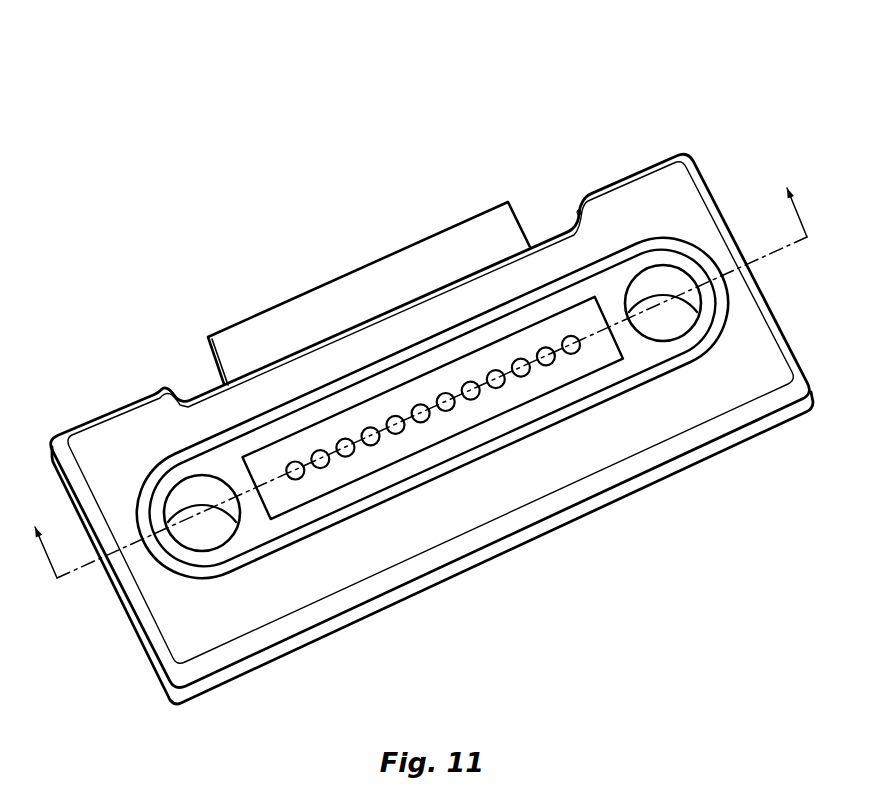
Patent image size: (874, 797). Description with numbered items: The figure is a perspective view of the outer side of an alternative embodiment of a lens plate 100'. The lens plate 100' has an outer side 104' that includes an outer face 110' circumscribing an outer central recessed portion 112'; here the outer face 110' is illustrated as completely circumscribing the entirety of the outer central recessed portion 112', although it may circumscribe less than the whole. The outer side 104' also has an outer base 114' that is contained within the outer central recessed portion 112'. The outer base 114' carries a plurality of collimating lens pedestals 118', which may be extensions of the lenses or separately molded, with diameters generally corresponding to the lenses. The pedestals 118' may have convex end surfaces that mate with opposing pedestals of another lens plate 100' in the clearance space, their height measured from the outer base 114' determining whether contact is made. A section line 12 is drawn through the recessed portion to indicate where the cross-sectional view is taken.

The electrical connector assembly 100' is at (437, 366).
The connector housing 104' is at (432, 429).
The top mounting surface 110' is at (430, 413).
The elongated recess with mounting holes 112' is at (494, 408).
The contact insert 114' is at (433, 456).
The electrical contacts 118' is at (433, 489).
The section line 12- 12 is at (426, 383).